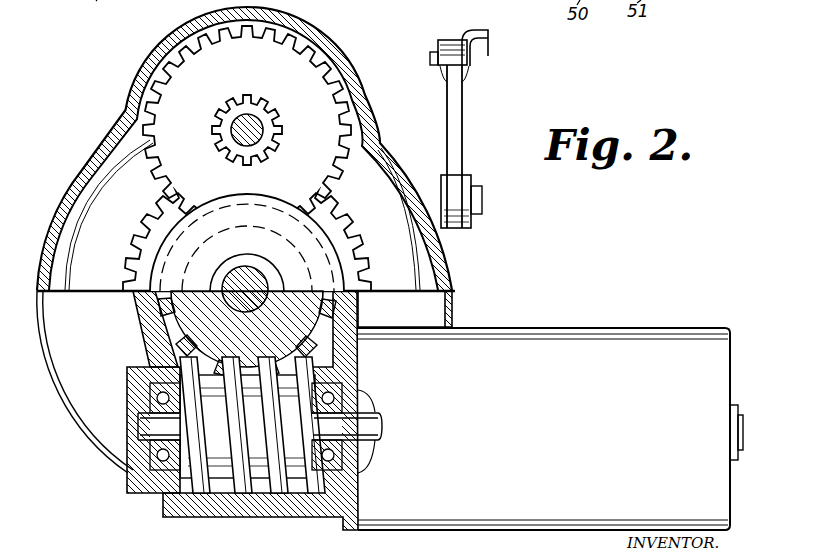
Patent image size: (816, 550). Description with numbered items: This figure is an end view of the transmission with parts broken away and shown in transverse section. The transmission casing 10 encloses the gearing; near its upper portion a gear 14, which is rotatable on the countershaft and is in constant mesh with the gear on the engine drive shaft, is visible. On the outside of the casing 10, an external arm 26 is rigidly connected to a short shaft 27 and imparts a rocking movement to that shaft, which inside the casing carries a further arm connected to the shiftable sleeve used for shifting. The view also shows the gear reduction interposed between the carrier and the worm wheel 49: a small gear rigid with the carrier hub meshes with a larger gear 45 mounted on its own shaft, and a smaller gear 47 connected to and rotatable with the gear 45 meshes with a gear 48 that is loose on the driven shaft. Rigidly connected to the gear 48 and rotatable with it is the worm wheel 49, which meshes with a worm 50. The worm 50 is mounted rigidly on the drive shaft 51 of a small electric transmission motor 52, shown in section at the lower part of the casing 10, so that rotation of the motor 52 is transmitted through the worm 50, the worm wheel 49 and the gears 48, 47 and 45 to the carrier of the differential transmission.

The transmission casing 10 is at (85, 166).
The gear 14 is at (103, 0).
The external arm 26 is at (455, 133).
The short shaft 27 is at (483, 197).
The larger gear 45 is at (247, 130).
The smaller gear 47 is at (270, 132).
The gear 48 is at (333, 216).
The worm wheel 49 is at (190, 322).
The worm 50 is at (230, 465).
The drive shaft 51 is at (370, 425).
The electric transmission motor 52 is at (628, 352).